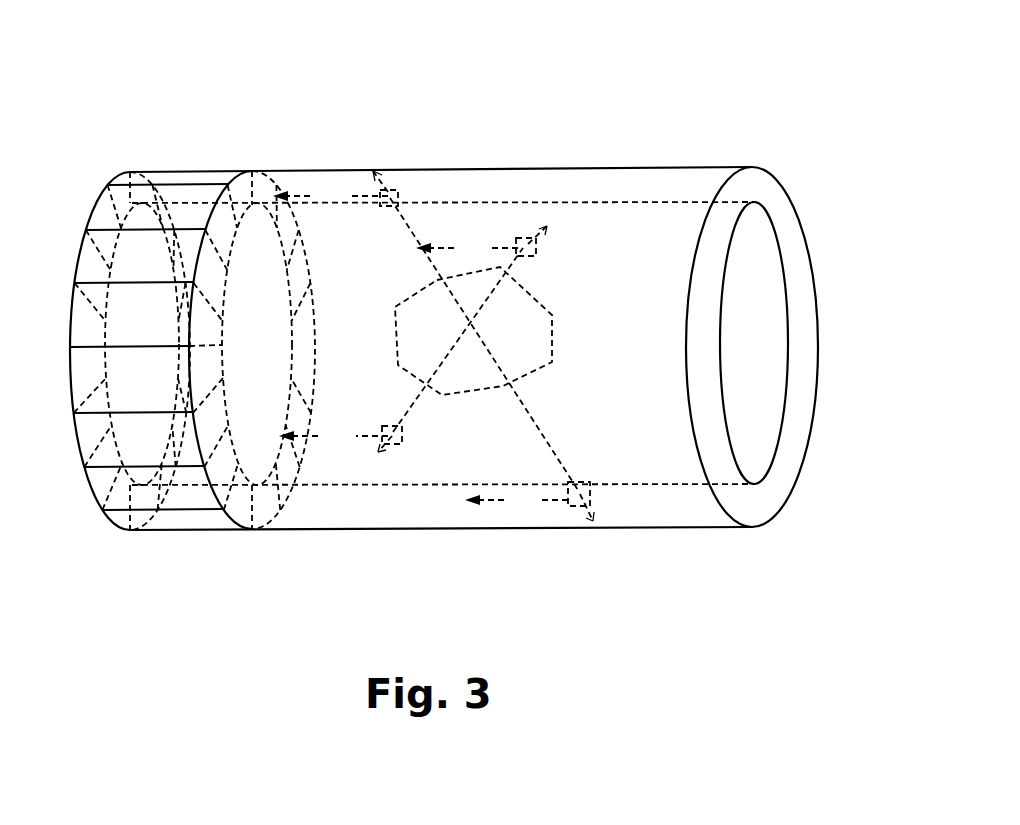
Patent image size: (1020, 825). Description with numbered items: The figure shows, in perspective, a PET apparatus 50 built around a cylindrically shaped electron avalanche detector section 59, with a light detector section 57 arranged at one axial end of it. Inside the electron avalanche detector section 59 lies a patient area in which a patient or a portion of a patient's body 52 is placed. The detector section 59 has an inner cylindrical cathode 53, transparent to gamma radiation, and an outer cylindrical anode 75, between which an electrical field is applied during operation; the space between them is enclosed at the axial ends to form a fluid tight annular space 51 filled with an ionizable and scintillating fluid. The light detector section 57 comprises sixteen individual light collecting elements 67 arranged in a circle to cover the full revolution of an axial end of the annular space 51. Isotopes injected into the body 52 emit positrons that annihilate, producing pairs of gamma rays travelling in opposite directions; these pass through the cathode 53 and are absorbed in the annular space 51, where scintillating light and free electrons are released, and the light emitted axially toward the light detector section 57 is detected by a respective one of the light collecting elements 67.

The apparatus for positron emission tomography 50 is at (441, 108).
The annular space 51 is at (760, 195).
The patient 52 is at (556, 314).
The inner cylindrical cathode 53 is at (781, 263).
The light detector section 57 is at (253, 150).
The electron avalanche detector section 59 is at (748, 147).
The light collecting elements 67 is at (82, 378).
The outer cylindrical anode 75 is at (795, 490).